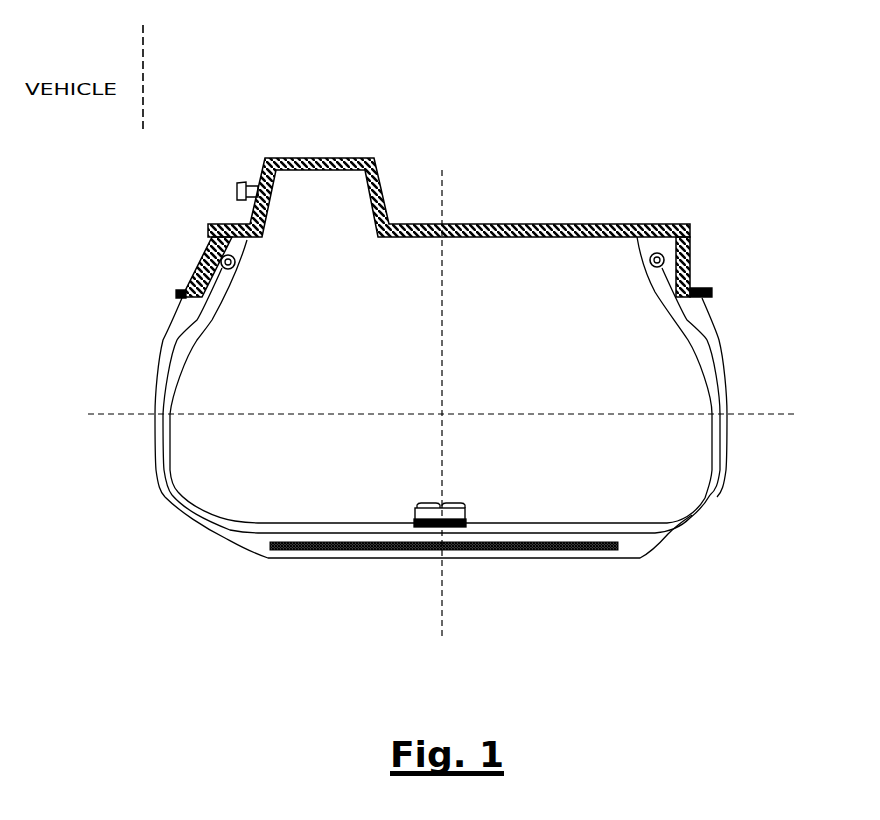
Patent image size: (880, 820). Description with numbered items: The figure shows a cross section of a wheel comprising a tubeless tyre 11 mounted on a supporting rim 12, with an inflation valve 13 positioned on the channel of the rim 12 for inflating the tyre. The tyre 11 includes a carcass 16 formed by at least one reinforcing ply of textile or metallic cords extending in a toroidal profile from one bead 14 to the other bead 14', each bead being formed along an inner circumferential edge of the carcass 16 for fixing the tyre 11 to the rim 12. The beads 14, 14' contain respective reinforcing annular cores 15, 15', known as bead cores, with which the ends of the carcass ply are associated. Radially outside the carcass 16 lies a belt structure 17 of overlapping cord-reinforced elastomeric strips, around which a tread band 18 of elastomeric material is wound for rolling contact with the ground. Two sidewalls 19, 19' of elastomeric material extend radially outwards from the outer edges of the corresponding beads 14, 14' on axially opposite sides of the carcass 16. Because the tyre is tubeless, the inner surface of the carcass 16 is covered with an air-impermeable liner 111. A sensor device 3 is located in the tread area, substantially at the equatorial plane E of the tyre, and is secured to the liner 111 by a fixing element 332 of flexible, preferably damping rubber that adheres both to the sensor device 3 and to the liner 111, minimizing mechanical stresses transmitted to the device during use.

The tyre 11 is at (440, 499).
The supporting rim 12 is at (403, 222).
The inflation valve 13 is at (250, 182).
The bead 14 is at (166, 255).
The bead 14' is at (761, 267).
The reinforcing annular core 15 is at (283, 286).
The reinforcing annular core 15' is at (600, 288).
The carcass 16 is at (185, 492).
The belt structure 17 is at (272, 545).
The tread band 18 is at (495, 558).
The sidewall 19 is at (135, 368).
The sidewall 19' is at (747, 367).
The liner 111 is at (385, 522).
The sensor device 3 is at (453, 556).
The fixing element 332 is at (425, 527).
The equatorial plane E is at (445, 267).